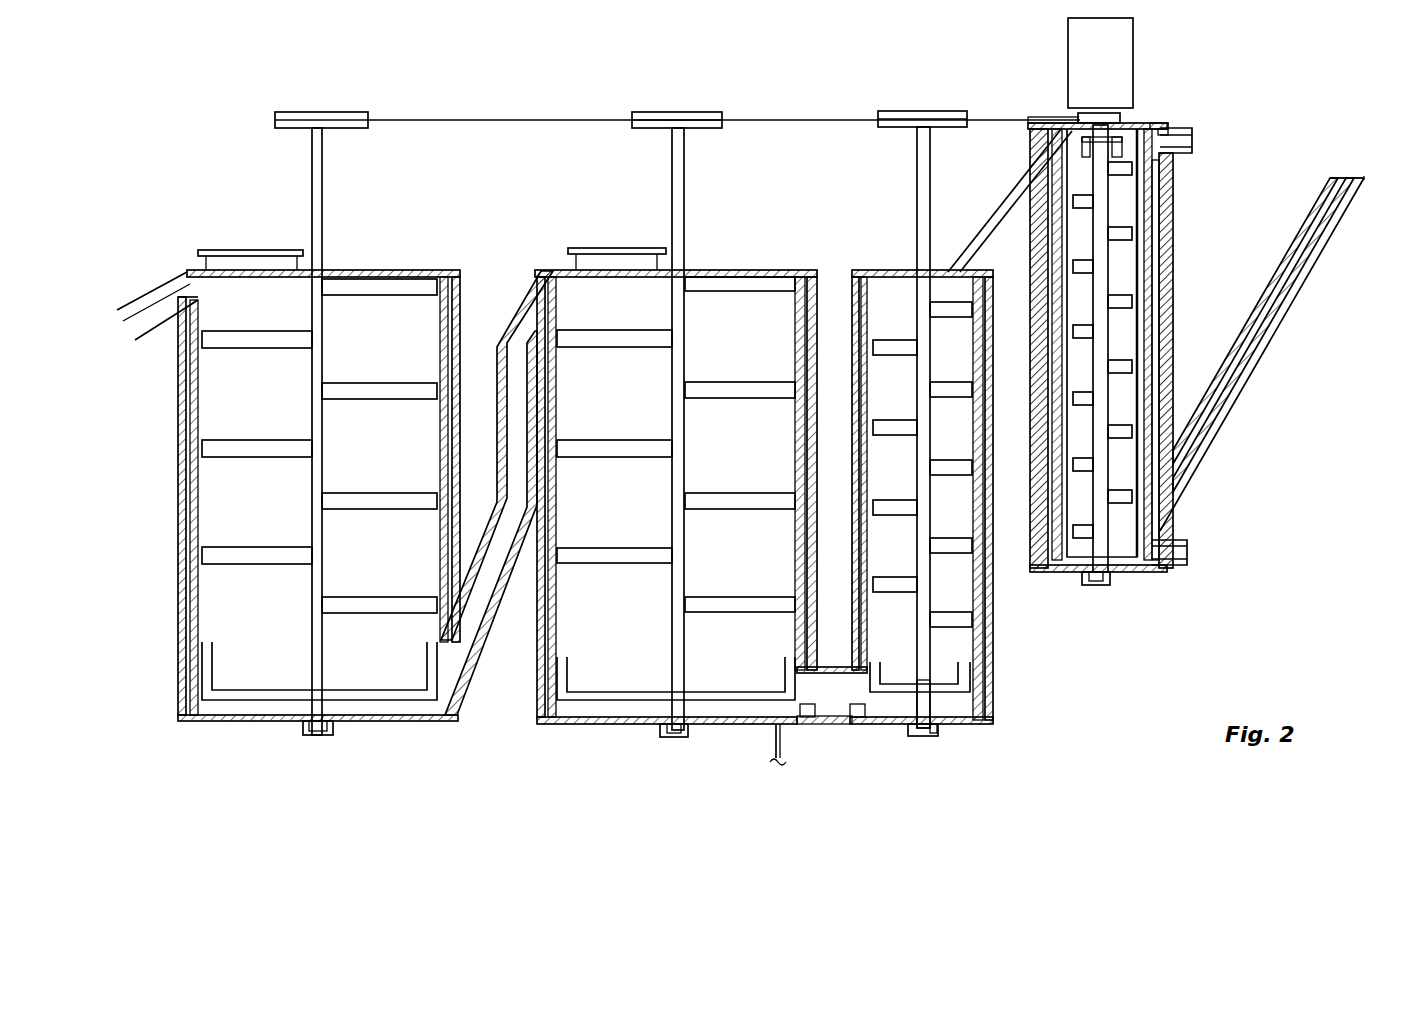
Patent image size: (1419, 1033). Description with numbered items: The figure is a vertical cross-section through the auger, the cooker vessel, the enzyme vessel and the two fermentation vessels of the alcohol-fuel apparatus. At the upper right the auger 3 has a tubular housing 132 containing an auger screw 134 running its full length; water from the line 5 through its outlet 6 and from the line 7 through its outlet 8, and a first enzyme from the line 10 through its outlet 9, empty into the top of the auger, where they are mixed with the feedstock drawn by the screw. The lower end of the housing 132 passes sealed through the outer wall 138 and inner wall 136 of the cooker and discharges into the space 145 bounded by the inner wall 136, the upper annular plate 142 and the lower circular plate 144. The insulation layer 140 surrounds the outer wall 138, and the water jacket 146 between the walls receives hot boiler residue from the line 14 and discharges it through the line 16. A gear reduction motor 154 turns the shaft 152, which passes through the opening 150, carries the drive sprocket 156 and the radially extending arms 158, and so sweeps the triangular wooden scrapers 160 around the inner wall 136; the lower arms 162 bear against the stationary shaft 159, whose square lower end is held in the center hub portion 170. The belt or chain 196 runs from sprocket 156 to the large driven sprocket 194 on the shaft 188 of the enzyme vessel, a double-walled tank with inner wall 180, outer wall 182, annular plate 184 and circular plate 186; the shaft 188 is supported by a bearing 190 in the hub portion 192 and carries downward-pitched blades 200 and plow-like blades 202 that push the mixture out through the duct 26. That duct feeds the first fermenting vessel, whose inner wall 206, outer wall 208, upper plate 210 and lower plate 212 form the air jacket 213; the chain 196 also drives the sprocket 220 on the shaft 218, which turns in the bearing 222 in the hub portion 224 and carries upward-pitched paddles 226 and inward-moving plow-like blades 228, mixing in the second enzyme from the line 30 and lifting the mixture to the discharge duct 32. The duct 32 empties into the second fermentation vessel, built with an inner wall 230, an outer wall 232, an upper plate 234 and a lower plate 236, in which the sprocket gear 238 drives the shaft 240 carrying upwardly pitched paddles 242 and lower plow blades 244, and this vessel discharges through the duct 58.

The sprocket gear 238 is at (290, 120).
The shaft 240 is at (312, 198).
The upper annular plate 234 is at (343, 271).
The duct 58 is at (142, 312).
The inner cylindrical wall 230 is at (443, 330).
The outer cylindrical wall 232 is at (456, 312).
The lower circular plate 236 is at (365, 721).
The upwardly pitched paddles 242 is at (228, 340).
The lower plow blades 244 is at (218, 678).
The discharge duct 32 is at (516, 330).
The driven sprocket 220 is at (650, 120).
The upper annular plate 210 is at (710, 270).
The air jacket 213 is at (540, 665).
The inner wall 206 is at (800, 300).
The outer wall 208 is at (812, 300).
The lower circular plate 212 is at (718, 725).
The center hub portion 224 is at (655, 727).
The bearing 222 is at (680, 733).
The shaft 218 is at (672, 673).
The blades or paddles 226 is at (728, 386).
The plow-like blades 228 is at (573, 700).
The line 30 is at (790, 753).
The duct 26 is at (828, 667).
The driven sprocket 194 is at (882, 118).
The belt or chain 196 is at (805, 120).
The annular plate 184 is at (872, 271).
The inner wall 180 is at (985, 648).
The outer wall 182 is at (990, 672).
The circular plate 186 is at (965, 725).
The hub portion 192 is at (912, 728).
The bearing 190 is at (938, 731).
The shaft 188 is at (922, 685).
The pitched blades or paddles 200 is at (893, 592).
The plow-like blades 202 is at (888, 695).
The gear reduction motor 154 is at (1116, 56).
The opening 150 is at (1097, 123).
The shaft 152 is at (1068, 118).
The radially extending arms 158 is at (1040, 120).
The drive sprocket 156 is at (1105, 133).
The annular plate 142 is at (1152, 122).
The line 14 is at (1185, 128).
The scrapers 160 is at (1033, 570).
The lower arms 162 is at (1075, 562).
The inner wall 136 is at (1152, 190).
The outer wall 138 is at (1160, 210).
The layer of insulation 140 is at (1170, 230).
The water jacket 146 is at (1150, 262).
The circular plate 144 is at (1133, 572).
The space 145 is at (1115, 470).
The center hub portion 170 is at (1098, 586).
The stationary shaft 159 is at (1103, 505).
The line 16 is at (1168, 540).
The auger 3 is at (1250, 318).
The tubular housing 132 is at (1288, 264).
The auger screw 134 is at (1298, 286).
The line 7 is at (1331, 178).
The outlet 8 is at (1339, 178).
The outlet 9 is at (1348, 178).
The line 10 is at (1356, 178).
The outlet 6 is at (1363, 179).
The line 5 is at (1365, 178).